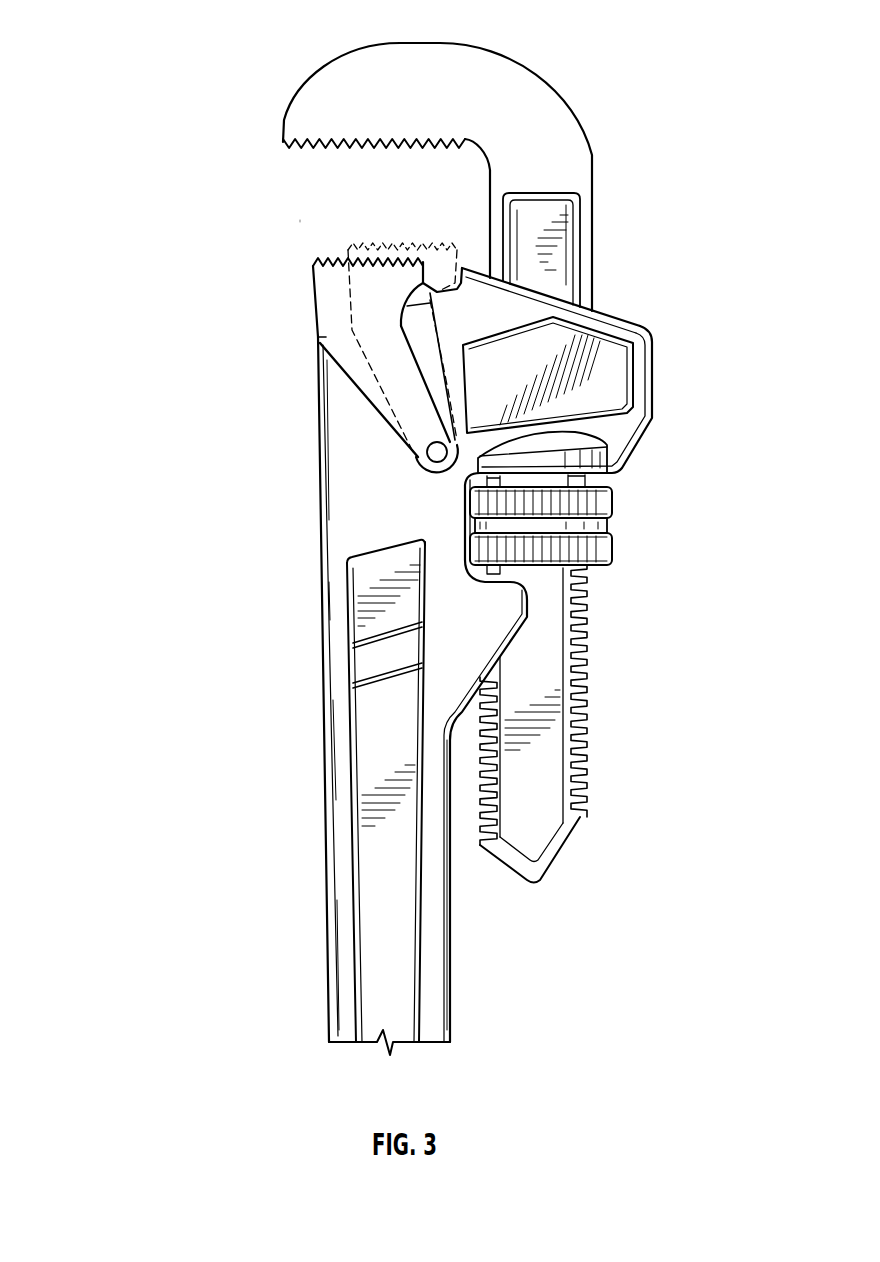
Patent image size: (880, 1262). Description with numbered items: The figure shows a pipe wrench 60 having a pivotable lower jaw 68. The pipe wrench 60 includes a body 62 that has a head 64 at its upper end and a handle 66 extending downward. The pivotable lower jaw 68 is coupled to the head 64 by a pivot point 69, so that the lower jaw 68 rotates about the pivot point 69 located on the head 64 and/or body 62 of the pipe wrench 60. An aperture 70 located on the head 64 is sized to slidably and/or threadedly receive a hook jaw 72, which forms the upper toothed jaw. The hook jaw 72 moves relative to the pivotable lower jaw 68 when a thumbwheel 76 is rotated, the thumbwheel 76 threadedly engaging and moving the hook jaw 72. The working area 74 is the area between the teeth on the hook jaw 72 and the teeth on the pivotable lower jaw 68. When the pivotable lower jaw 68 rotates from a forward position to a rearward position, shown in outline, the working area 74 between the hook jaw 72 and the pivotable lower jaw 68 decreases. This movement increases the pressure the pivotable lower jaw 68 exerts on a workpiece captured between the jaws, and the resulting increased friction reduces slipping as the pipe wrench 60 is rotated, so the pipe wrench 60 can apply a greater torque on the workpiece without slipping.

The pipe wrench 60 is at (126, 104).
The body 62 is at (320, 597).
The head 64 is at (652, 373).
The handle 66 is at (445, 997).
The pivotable lower jaw 68 is at (313, 283).
The pivot point 69 is at (436, 452).
The aperture 70 is at (606, 318).
The hook jaw 72 is at (546, 67).
The working area 74 is at (262, 198).
The thumbwheel 76 is at (612, 548).